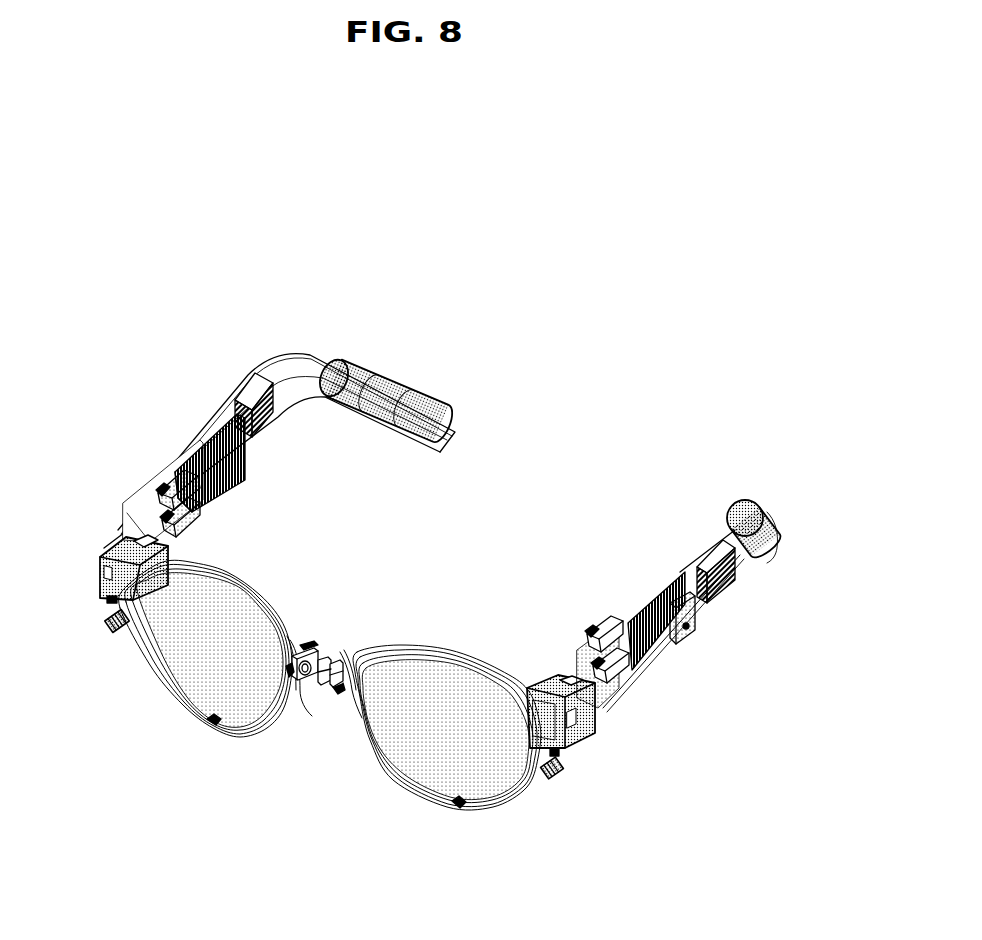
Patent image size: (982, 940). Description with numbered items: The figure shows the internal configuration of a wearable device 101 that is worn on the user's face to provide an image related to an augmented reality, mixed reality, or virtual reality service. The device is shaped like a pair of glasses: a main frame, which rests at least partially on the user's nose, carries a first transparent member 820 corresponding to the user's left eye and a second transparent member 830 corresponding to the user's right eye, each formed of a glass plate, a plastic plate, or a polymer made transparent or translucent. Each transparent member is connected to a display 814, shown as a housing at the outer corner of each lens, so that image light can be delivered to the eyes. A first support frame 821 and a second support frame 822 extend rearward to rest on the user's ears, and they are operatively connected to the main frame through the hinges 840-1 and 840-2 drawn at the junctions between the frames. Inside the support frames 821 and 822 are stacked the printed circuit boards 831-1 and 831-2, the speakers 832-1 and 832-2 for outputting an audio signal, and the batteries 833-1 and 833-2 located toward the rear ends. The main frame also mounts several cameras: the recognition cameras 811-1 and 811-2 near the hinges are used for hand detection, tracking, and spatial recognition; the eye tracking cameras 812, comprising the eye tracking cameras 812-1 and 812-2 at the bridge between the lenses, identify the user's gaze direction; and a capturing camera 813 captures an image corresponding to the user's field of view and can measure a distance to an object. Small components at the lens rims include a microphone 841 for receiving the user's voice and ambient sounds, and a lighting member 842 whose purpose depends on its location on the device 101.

The wearable device 101 is at (582, 414).
The recognition camera 811-1 is at (562, 776).
The recognition camera 811-2 is at (107, 621).
The eye tracking cameras 812 is at (342, 608).
The eye tracking camera 812-1 is at (334, 657).
The eye tracking camera 812-2 is at (295, 645).
The capturing camera 813 is at (293, 690).
The display 814 is at (113, 548).
The first transparent member 820 is at (424, 760).
The first support frame 821 is at (718, 606).
The second support frame 822 is at (252, 458).
The second transparent member 830 is at (178, 677).
The printed circuit board 831-1 is at (650, 600).
The printed circuit board 831-2 is at (207, 438).
The speaker 832-1 is at (703, 553).
The speaker 832-2 is at (253, 394).
The battery 833-1 is at (743, 502).
The battery 833-2 is at (420, 380).
The hinge 840-1 is at (590, 634).
The hinge 840-2 is at (158, 486).
The microphone 841 is at (212, 724).
The lighting member 842 is at (107, 600).